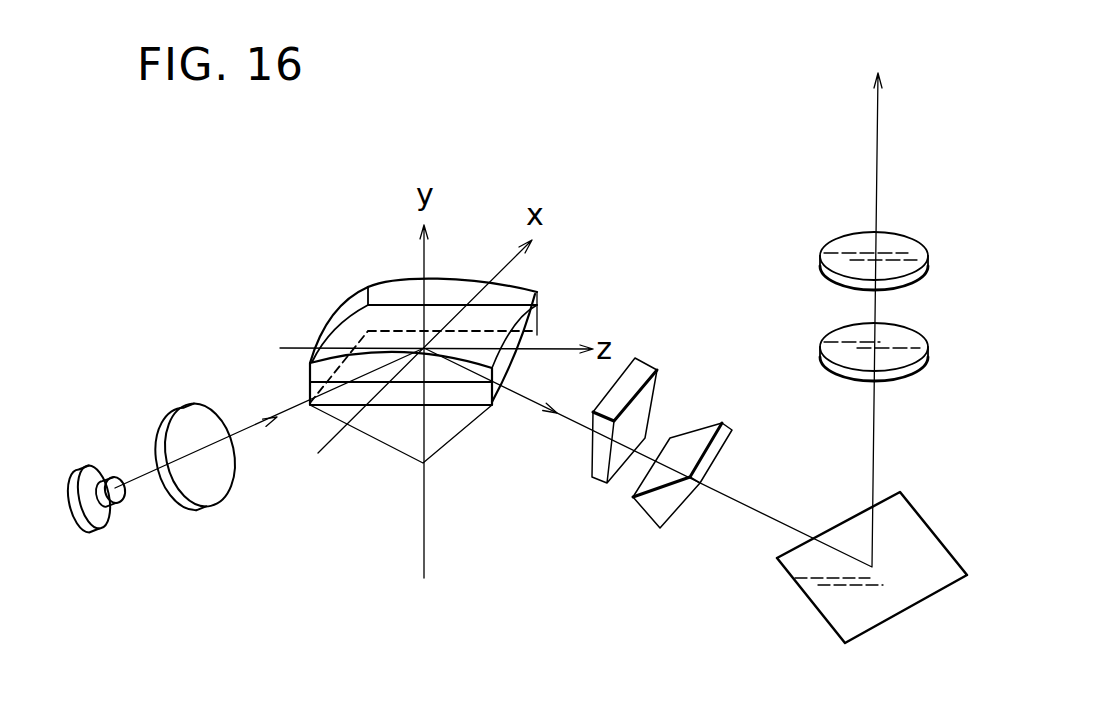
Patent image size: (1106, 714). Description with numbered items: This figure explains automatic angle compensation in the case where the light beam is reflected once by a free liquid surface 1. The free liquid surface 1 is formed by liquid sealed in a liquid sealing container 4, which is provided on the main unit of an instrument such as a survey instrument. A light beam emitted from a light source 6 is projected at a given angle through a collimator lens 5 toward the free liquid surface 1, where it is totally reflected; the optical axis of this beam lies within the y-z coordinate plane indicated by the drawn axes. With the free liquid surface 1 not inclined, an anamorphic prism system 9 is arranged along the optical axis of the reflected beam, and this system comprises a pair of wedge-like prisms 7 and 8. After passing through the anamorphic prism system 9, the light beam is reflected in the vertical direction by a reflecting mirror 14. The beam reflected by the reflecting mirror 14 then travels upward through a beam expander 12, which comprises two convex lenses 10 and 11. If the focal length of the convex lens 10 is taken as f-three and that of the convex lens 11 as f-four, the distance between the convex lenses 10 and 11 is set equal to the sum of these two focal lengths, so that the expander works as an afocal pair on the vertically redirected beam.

The free liquid surface 1 is at (492, 317).
The liquid sealing container 4 is at (487, 465).
The collimator lens 5 is at (222, 497).
The light source 6 is at (113, 523).
The wedge-like prism 7 is at (640, 373).
The wedge-like prism 8 is at (717, 420).
The anamorphic prism system 9 is at (606, 505).
The convex lens 10 is at (897, 353).
The convex lens 11 is at (900, 257).
The beam expander 12 is at (953, 315).
The reflecting mirror 14 is at (958, 582).